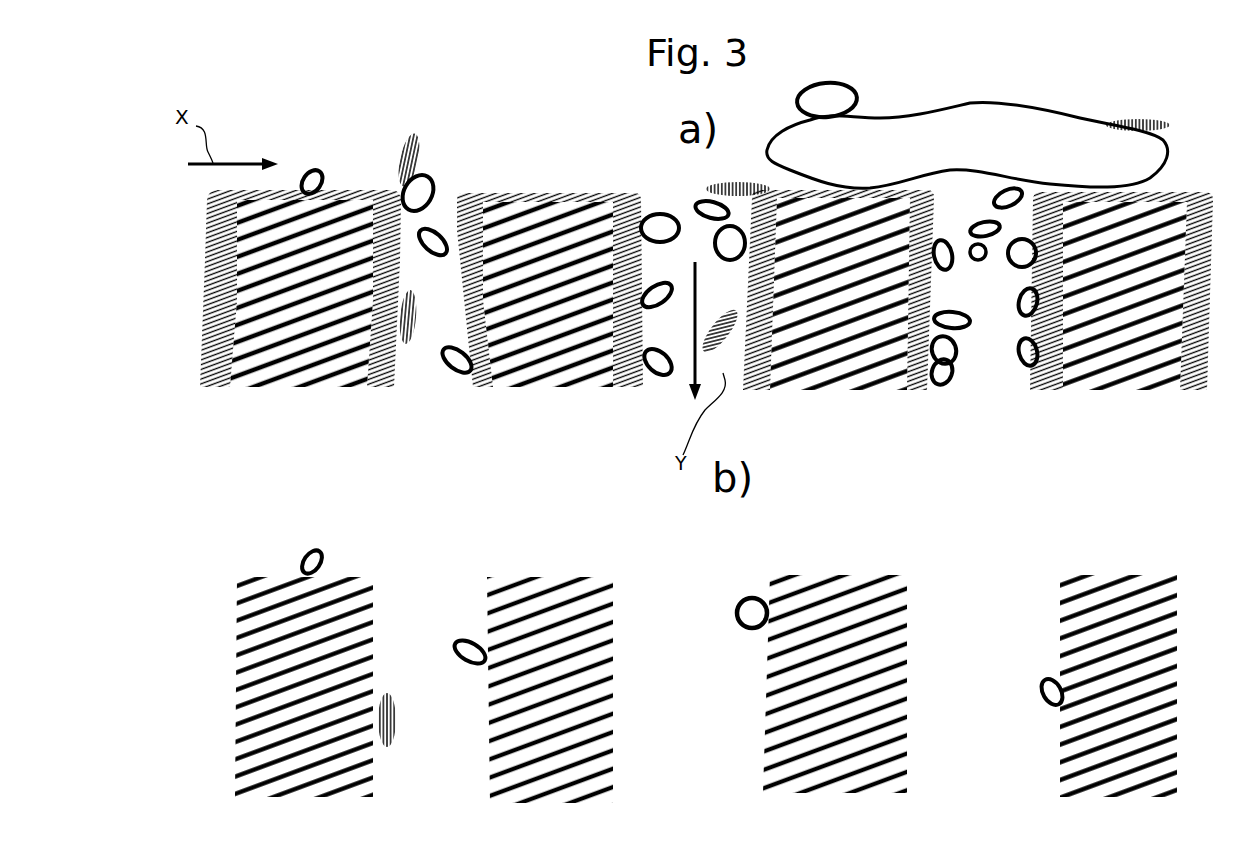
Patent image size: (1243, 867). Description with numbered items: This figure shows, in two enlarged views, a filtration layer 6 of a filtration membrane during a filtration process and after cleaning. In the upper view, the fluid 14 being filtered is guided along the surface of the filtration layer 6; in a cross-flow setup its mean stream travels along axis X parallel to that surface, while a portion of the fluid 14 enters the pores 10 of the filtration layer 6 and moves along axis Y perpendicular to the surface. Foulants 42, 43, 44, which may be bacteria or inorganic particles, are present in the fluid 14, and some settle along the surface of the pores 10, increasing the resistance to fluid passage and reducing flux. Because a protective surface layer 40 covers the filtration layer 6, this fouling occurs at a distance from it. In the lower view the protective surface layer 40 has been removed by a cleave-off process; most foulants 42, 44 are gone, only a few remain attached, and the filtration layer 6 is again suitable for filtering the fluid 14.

The filtration layer 6 is at (1133, 377).
The pores 10 is at (670, 394).
The fluid 14 is at (337, 150).
The protective surface layer 40 is at (382, 375).
The foulant 42 is at (422, 143).
The foulant 43 is at (1163, 156).
The foulant 44 is at (990, 258).